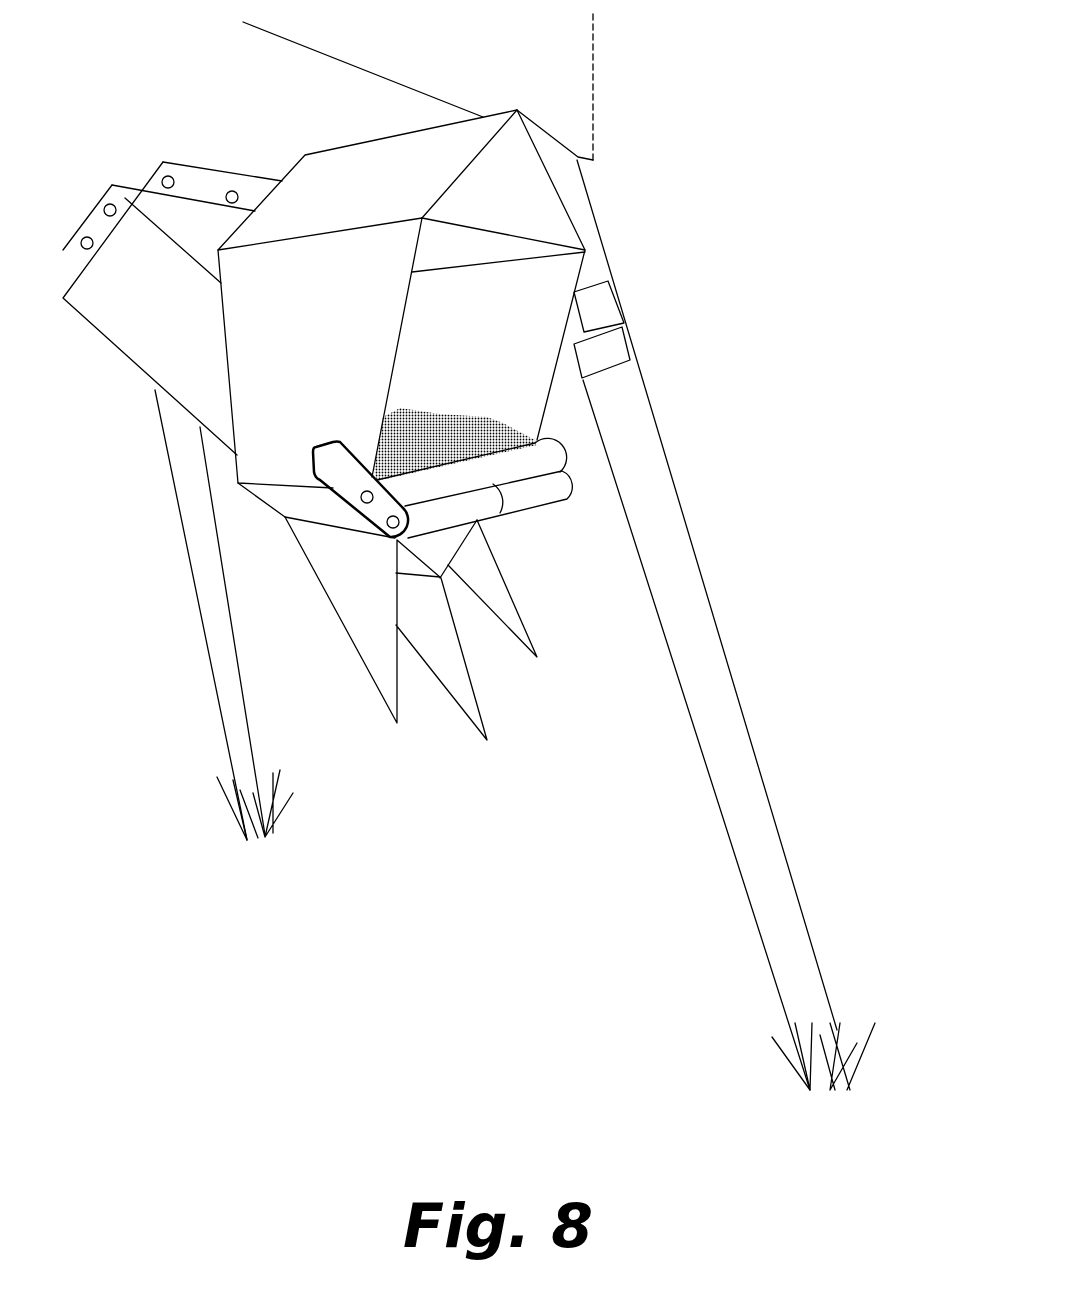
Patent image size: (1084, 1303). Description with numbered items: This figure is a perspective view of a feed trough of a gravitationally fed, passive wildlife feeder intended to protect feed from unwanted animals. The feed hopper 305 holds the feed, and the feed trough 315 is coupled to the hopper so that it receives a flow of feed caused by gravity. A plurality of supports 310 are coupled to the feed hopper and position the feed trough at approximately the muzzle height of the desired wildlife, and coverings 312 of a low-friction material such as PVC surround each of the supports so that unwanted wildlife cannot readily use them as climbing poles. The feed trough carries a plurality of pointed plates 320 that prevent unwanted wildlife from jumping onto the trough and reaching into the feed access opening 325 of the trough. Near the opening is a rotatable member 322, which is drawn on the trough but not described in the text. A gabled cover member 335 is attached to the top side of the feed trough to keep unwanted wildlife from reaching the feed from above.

The feed hopper 305 is at (512, 60).
The supports 310 is at (602, 313).
The coverings 312 is at (228, 678).
The feed trough 315 is at (562, 382).
The pointed plates 320 is at (408, 480).
The roller 322 is at (438, 513).
The feed access opening 325 is at (506, 392).
The gabled cover member 335 is at (388, 195).